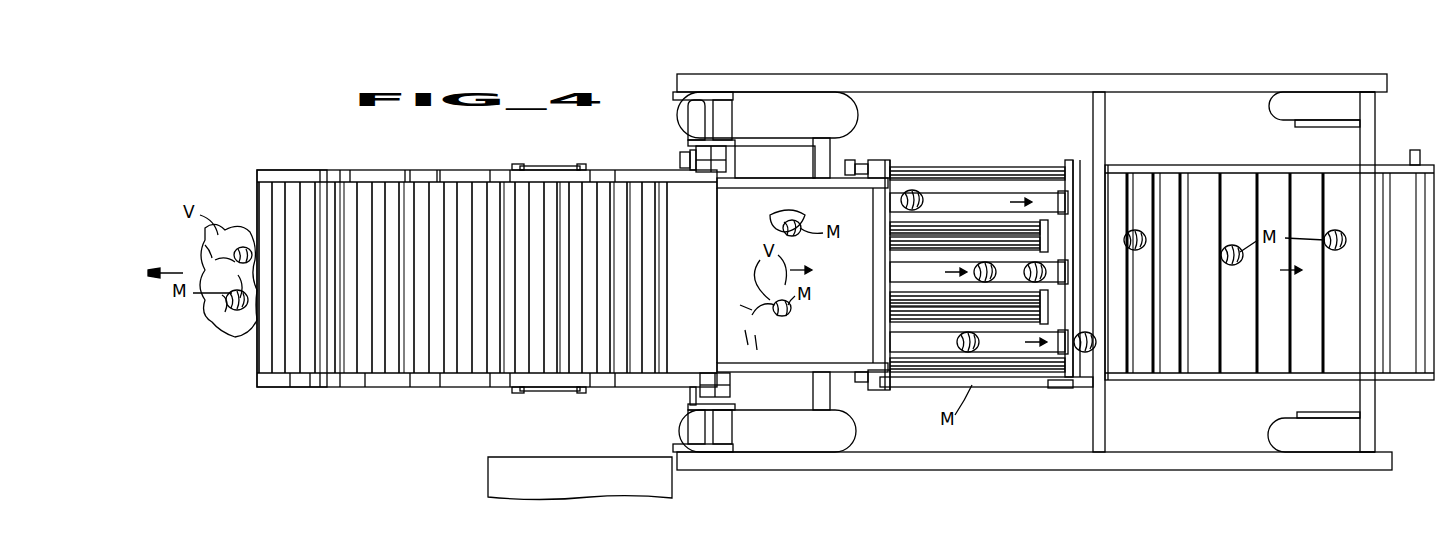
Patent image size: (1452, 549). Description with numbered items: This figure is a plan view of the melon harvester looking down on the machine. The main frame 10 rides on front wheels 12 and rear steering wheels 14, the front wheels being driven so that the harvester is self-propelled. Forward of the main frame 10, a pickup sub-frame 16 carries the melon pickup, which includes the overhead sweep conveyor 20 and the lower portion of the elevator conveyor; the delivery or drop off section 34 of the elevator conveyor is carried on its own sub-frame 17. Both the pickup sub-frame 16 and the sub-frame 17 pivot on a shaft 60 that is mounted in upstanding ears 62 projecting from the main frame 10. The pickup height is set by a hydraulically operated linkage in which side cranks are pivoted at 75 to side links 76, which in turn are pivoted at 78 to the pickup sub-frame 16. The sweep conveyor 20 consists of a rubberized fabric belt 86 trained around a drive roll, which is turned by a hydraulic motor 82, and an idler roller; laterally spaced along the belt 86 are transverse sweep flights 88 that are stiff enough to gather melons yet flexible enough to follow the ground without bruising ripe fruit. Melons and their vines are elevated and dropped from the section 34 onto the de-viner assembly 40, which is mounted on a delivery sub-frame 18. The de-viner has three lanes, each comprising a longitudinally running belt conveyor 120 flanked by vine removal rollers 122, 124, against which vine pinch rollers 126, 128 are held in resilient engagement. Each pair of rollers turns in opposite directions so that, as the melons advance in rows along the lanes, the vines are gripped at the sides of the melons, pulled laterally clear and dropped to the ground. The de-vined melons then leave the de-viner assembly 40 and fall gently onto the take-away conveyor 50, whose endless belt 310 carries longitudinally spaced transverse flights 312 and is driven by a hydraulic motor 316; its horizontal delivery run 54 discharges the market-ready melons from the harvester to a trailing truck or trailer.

The main frame 10 is at (922, 73).
The front wheels 12 is at (782, 122).
The rear steering wheels 14 is at (1330, 114).
The pickup sub-frame 16 is at (370, 172).
The sub-frame of the delivery section 17 is at (818, 178).
The delivery sub-frame 18 is at (1050, 390).
The overhead sweep conveyor 20 is at (308, 172).
The delivery or drop off section 34 is at (826, 337).
The de-viner assembly 40 is at (965, 265).
The take-away conveyor 50 is at (1269, 263).
The delivery run 54 is at (1268, 375).
The shaft 60 is at (740, 158).
The upstanding ears 62 is at (682, 150).
The pivot 75 is at (598, 146).
The side links 76 is at (548, 165).
The pivot 78 is at (517, 164).
The hydraulic motor 82 is at (680, 158).
The rubberized fabric belt 86 is at (365, 373).
The transverse sweep flights 88 is at (437, 182).
The belt conveyor 120 is at (975, 200).
The vine removal roller 122 is at (1050, 205).
The vine removal roller 124 is at (1020, 200).
The vine pinch roller 126 is at (890, 292).
The vine pinch roller 128 is at (928, 195).
The endless belt 310 is at (1145, 375).
The transverse flights 312 is at (1245, 172).
The hydraulic motor 316 is at (1410, 150).